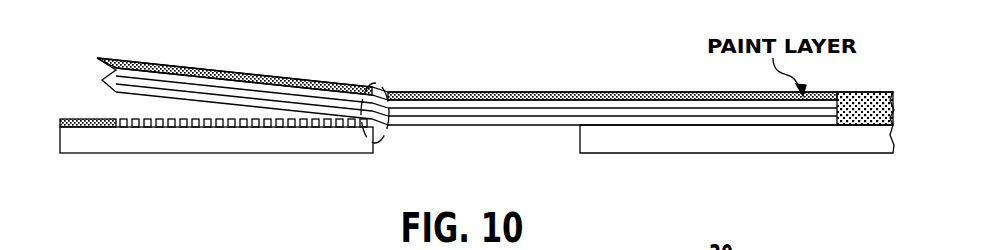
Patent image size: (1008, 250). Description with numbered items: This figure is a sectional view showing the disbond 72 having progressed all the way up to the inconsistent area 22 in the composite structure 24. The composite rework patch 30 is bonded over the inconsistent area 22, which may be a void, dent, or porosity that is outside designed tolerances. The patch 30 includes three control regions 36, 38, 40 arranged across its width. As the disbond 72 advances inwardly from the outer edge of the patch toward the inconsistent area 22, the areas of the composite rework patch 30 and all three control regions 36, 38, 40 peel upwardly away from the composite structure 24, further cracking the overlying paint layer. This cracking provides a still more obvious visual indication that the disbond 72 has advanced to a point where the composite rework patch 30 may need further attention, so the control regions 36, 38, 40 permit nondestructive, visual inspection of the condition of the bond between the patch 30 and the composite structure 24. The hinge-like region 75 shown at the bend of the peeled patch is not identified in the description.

The inconsistent area 22 is at (428, 137).
The composite structure 24 is at (95, 138).
The composite rework patch 30 is at (583, 85).
The first control region 36 is at (121, 49).
The second control region 38 is at (252, 96).
The third control region 40 is at (252, 108).
The disbond 72 is at (148, 107).
The hinge region 75 is at (380, 79).